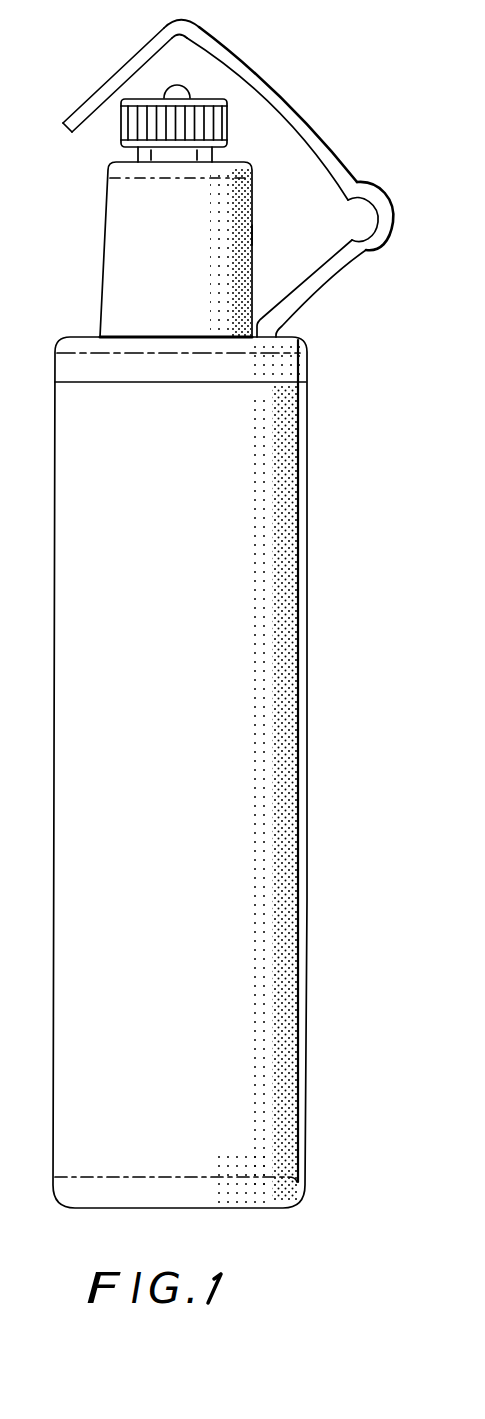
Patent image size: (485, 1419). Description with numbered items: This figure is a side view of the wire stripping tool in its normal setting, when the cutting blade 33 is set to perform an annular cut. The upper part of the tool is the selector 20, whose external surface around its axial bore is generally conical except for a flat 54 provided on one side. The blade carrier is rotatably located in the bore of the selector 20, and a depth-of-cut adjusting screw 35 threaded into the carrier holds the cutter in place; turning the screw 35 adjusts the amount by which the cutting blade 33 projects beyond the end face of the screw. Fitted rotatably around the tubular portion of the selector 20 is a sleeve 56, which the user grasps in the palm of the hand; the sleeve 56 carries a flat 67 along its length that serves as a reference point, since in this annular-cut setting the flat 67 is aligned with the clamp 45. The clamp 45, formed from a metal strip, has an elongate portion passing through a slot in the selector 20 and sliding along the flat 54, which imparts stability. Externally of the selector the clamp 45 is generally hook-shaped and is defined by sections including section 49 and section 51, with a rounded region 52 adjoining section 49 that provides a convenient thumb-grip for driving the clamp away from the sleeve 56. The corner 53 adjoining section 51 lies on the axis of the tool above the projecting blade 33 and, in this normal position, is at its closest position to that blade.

The selector 20 is at (125, 258).
The cutting blade 33 is at (187, 86).
The depth-of-cut adjusting screw 35 is at (189, 118).
The clamp 45 is at (238, 185).
The section of clamp 49 is at (322, 280).
The section of clamp 51 is at (101, 88).
The rounded region 52 is at (380, 237).
The corner 53 is at (190, 14).
The flat 54 is at (262, 233).
The sleeve 56 is at (213, 752).
The flat 67 is at (307, 650).